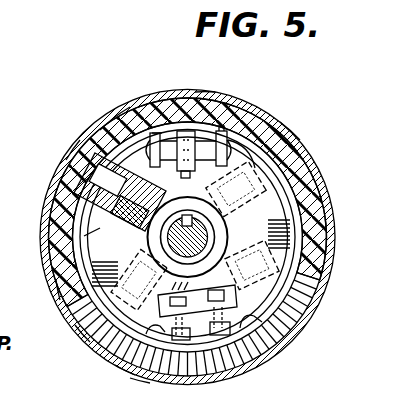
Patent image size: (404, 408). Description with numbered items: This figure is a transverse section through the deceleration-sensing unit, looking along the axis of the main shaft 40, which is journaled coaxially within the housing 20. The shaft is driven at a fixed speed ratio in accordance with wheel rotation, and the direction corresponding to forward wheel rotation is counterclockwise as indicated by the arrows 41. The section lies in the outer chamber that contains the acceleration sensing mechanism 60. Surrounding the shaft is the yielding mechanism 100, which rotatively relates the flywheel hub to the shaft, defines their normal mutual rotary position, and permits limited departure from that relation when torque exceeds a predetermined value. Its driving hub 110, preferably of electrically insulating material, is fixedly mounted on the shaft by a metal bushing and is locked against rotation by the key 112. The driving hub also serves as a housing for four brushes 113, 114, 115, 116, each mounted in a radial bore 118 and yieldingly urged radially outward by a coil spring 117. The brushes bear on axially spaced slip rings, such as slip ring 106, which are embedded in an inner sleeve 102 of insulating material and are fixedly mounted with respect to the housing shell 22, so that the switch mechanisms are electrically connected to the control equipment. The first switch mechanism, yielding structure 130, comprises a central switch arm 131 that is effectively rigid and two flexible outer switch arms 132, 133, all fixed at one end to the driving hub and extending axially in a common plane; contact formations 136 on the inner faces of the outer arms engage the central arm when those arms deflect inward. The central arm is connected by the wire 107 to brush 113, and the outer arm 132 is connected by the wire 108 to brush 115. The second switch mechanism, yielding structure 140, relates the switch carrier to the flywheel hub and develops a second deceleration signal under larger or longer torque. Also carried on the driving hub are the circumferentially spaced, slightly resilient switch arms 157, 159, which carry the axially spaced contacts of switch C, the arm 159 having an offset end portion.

The housing 20 is at (340, 229).
The housing shell 22 is at (309, 264).
The main shaft 40 is at (205, 238).
The arrows 41 is at (164, 75).
The acceleration sensing mechanism 60 is at (58, 288).
The yielding mechanism 100 is at (303, 247).
The inner sleeve 102 is at (122, 110).
The slip ring 106 is at (71, 148).
The wire 107 is at (173, 177).
The wire 108 is at (289, 129).
The driving hub 110 is at (301, 194).
The key 112 is at (207, 214).
The brush 113 is at (298, 170).
The brush 114 is at (79, 336).
The brush 115 is at (291, 286).
The brush 116 is at (90, 186).
The coil springs 117 is at (82, 236).
The radial bores 118 is at (87, 197).
The yielding structure 130 is at (259, 115).
The central switch arm 131 is at (241, 112).
The outer switch arm 132 is at (250, 121).
The outer switch arm 133 is at (152, 133).
The contact formations 136 is at (207, 92).
The yielding structure 140 is at (236, 376).
The switch arm 157 is at (139, 379).
The switch arm 159 is at (236, 329).